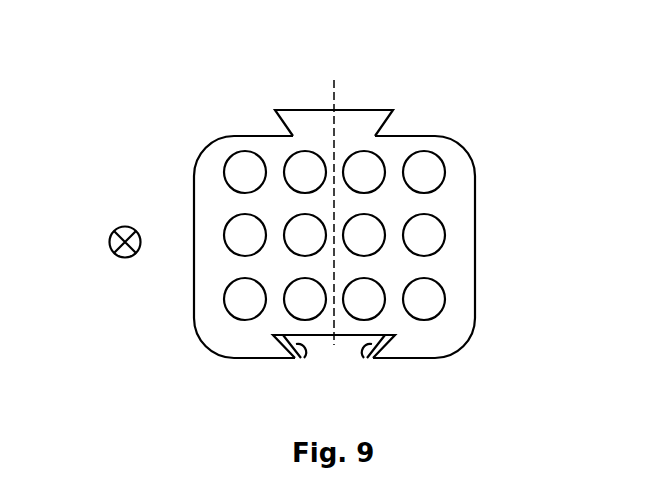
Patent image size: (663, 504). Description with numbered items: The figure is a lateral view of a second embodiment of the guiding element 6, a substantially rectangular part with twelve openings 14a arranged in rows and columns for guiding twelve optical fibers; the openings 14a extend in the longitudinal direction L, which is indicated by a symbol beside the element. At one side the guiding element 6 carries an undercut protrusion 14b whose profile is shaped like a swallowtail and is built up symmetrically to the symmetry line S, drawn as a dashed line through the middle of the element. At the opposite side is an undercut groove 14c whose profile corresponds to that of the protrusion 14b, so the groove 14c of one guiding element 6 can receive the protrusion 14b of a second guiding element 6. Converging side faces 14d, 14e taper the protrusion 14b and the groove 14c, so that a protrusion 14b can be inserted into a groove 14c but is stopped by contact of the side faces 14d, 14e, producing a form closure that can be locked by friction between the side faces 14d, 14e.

The guiding element 6 is at (140, 81).
The openings 14a is at (425, 172).
The undercut protrusion 14b is at (373, 120).
The undercut groove 14c is at (350, 337).
The side faces 14d is at (284, 126).
The side faces 14e is at (306, 352).
The symmetry line S is at (333, 93).
The longitudinal direction L is at (112, 253).